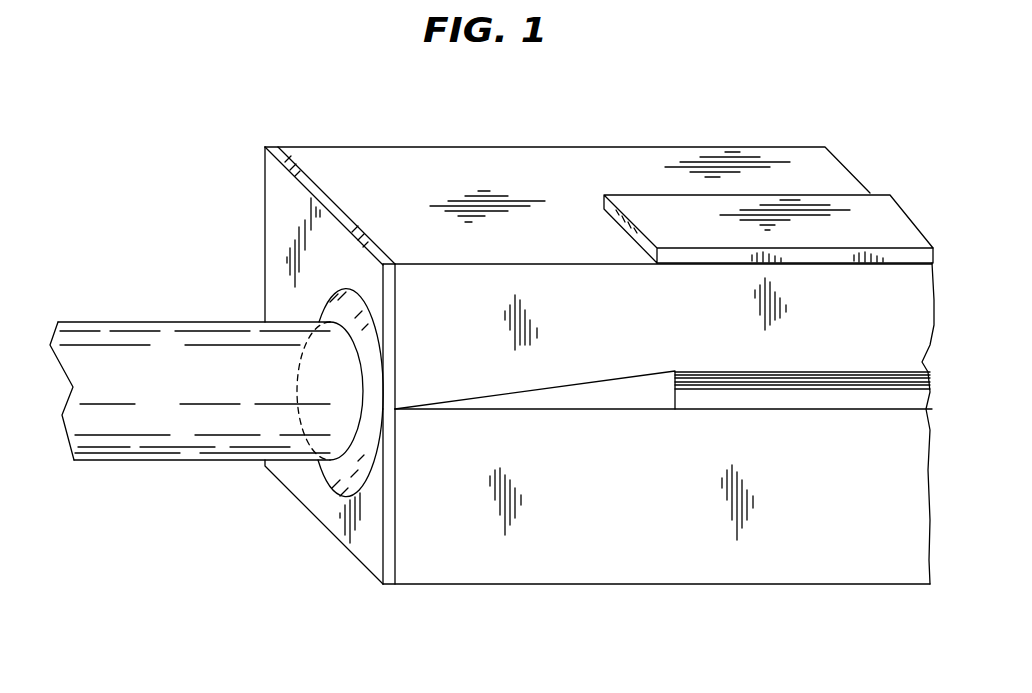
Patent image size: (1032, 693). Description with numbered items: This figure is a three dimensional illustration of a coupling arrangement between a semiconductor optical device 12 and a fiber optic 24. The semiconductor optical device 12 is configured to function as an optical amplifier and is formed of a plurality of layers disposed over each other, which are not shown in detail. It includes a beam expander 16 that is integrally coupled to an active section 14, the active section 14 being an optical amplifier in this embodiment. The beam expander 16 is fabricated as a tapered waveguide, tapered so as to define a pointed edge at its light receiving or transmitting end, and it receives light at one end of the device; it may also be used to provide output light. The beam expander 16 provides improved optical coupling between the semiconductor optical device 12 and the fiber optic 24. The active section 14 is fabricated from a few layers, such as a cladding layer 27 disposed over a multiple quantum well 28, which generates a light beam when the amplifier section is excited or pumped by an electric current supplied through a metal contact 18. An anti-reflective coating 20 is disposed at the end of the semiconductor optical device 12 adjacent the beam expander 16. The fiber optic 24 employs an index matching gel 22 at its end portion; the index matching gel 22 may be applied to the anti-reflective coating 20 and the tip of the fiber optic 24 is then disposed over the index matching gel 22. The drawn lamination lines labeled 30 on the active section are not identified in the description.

The semiconductor optical device 12 is at (523, 564).
The active section 14 is at (819, 404).
The beam expander 16 is at (623, 402).
The metal contact 18 is at (880, 210).
The anti-reflective coating 20 is at (388, 328).
The index matching gel 22 is at (337, 490).
The fiber optic 24 is at (130, 338).
The cladding layer 27 is at (288, 213).
The multiple quantum well 28 is at (789, 382).
The top layer 30 is at (856, 382).